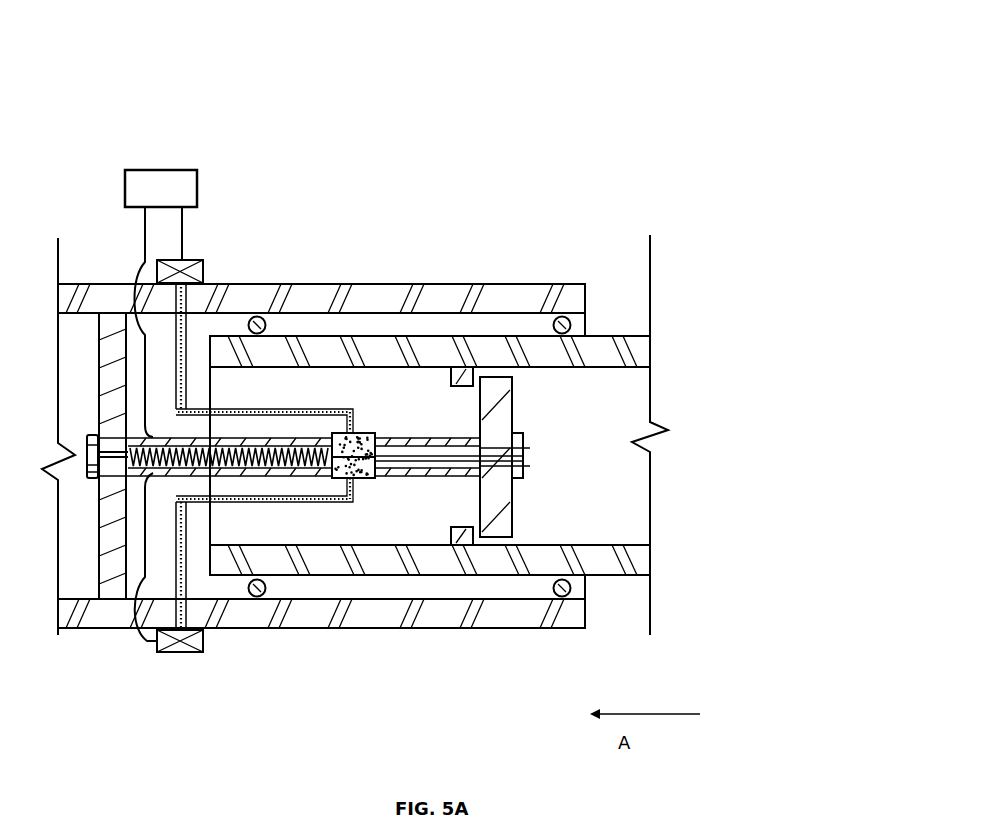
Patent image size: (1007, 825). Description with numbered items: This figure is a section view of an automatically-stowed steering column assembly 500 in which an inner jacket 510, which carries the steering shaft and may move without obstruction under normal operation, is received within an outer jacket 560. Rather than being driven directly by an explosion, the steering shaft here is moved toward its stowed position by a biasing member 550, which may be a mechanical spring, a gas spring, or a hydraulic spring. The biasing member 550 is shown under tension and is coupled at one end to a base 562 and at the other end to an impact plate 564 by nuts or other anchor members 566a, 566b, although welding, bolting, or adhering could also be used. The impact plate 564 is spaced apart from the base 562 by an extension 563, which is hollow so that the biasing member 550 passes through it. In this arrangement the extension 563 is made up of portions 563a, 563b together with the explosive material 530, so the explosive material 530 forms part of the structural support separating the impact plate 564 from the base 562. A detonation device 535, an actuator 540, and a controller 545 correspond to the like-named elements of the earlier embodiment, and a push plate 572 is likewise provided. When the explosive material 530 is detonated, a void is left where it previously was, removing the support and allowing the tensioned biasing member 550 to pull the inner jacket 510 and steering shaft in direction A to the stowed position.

The automatically-stowed steering column assembly 500 is at (525, 98).
The inner jacket 510 is at (613, 333).
The explosive material 530 is at (364, 434).
The detonation device 535 is at (306, 410).
The actuator 540 is at (204, 261).
The controller 545 is at (156, 186).
The biasing member 550 is at (291, 438).
The outer jacket 560 is at (572, 293).
The base 562 is at (100, 556).
The extension 563 is at (227, 593).
The portion of the extension 563a is at (290, 477).
The portion of the extension 563b is at (417, 478).
The impact plate 564 is at (503, 410).
The anchor member 566a is at (91, 434).
The anchor member 566b is at (523, 458).
The push plate 572 is at (455, 368).